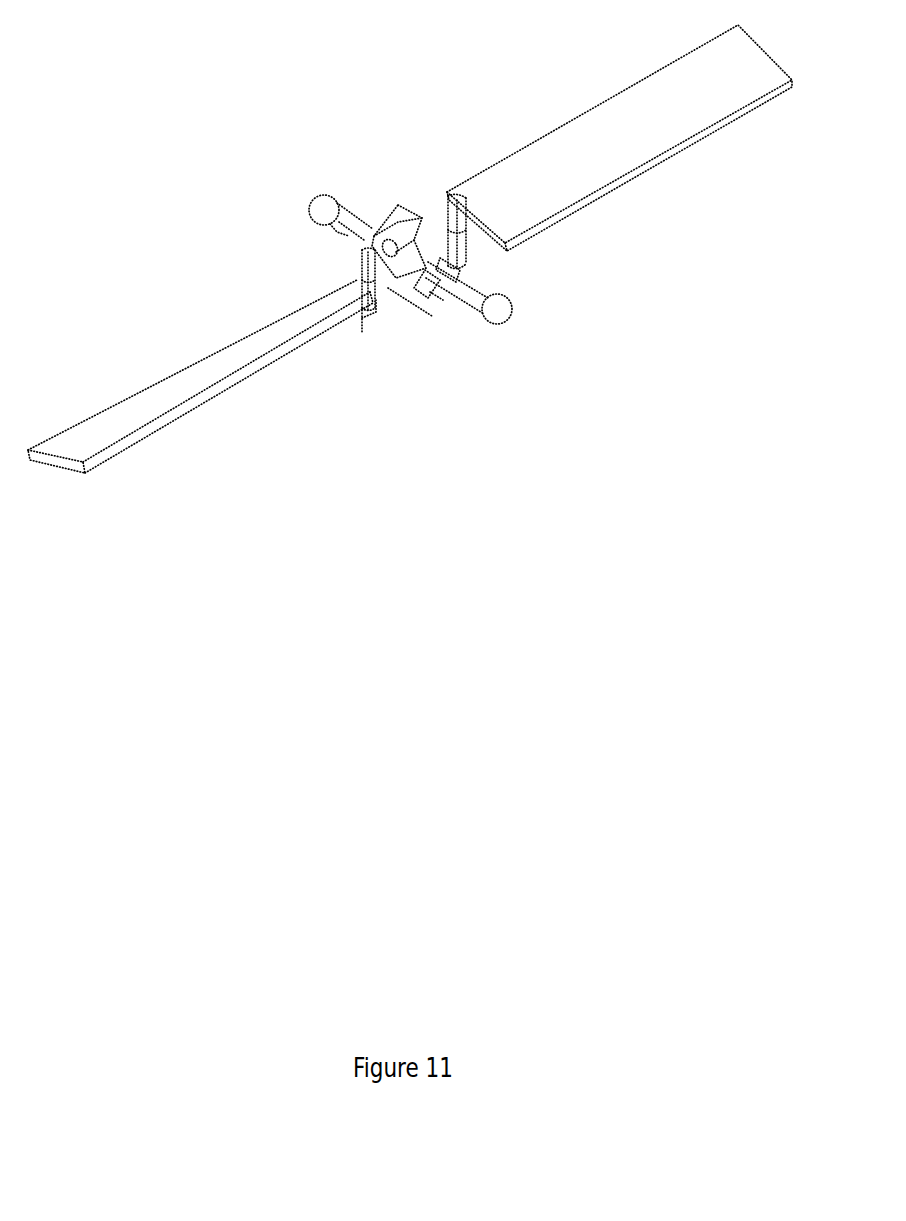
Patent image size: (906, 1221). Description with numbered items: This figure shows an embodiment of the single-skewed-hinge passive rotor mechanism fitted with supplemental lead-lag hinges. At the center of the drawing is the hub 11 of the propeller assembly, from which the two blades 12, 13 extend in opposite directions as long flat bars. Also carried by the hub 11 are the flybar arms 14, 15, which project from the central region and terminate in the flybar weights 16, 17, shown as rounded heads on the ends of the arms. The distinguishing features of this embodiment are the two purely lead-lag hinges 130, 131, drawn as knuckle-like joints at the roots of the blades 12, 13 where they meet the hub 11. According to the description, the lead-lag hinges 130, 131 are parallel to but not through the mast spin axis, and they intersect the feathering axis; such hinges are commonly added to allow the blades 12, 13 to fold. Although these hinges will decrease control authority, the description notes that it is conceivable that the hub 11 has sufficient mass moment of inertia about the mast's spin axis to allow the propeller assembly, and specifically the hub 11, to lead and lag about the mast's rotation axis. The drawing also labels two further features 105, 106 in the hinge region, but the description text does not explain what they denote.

The hub 11 is at (423, 313).
The blade 12 is at (153, 375).
The blade 13 is at (552, 132).
The flybar arm 14 is at (480, 290).
The flybar arm 15 is at (357, 233).
The flybar weight 16 is at (520, 307).
The flybar weight 17 is at (298, 211).
The first hinge slot 105 is at (368, 325).
The second hinge slot 106 is at (462, 272).
The lead-lag hinge 130 is at (348, 275).
The lead-lag hinge 131 is at (447, 213).